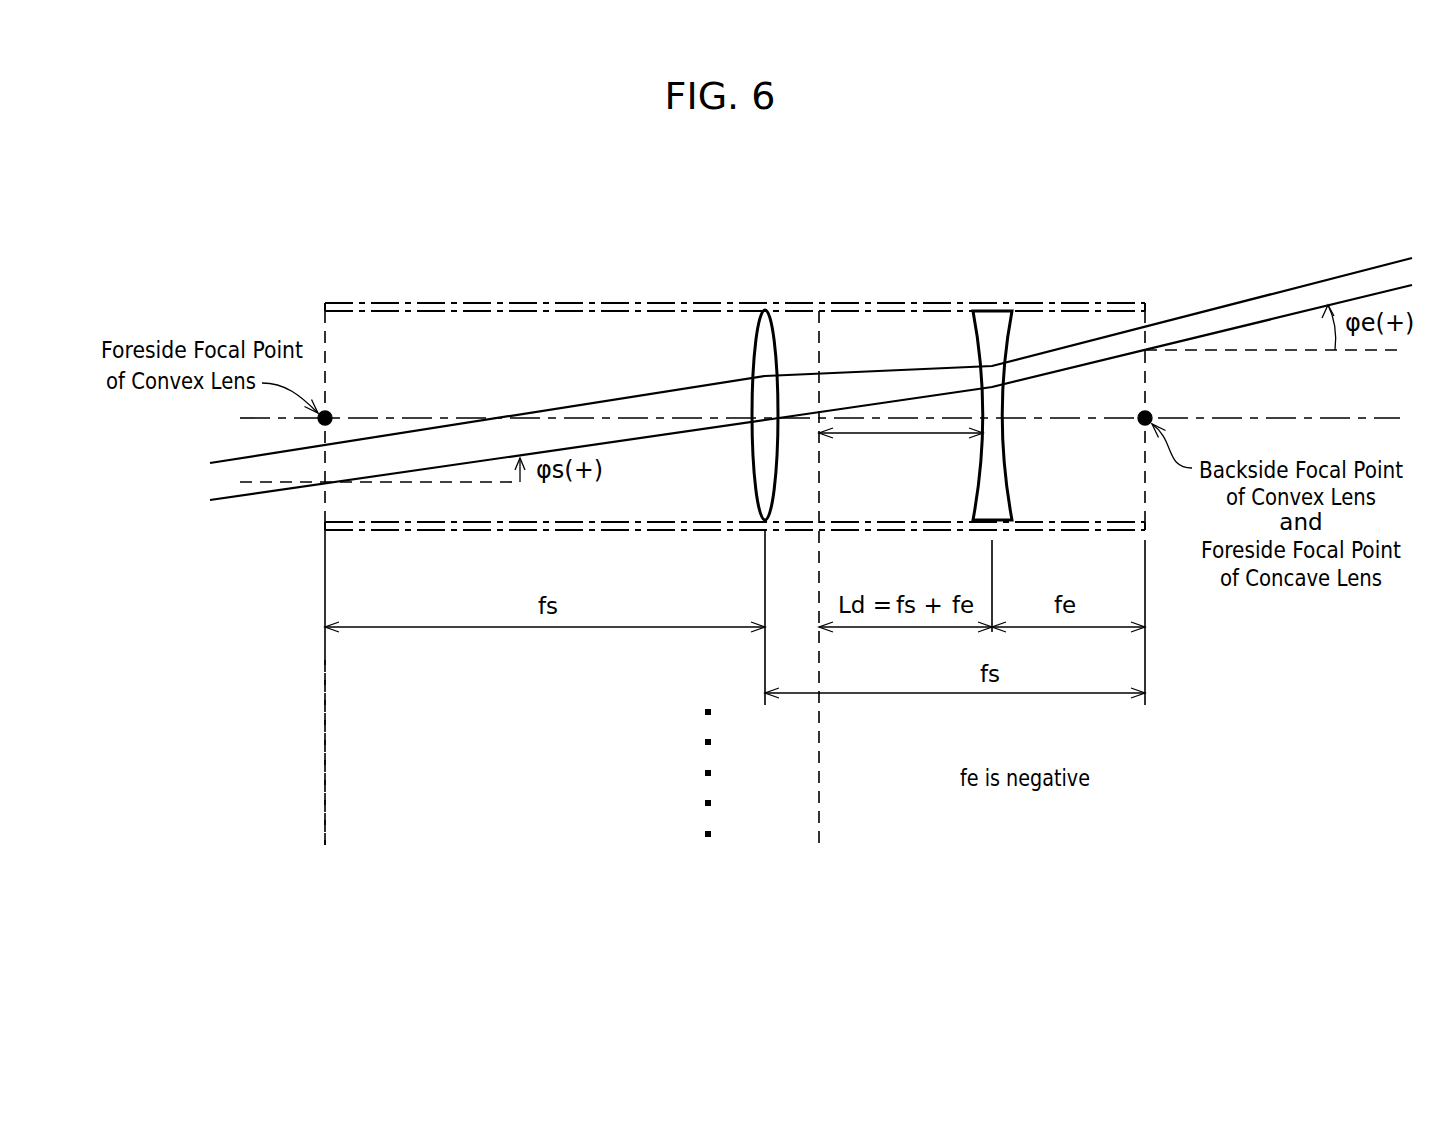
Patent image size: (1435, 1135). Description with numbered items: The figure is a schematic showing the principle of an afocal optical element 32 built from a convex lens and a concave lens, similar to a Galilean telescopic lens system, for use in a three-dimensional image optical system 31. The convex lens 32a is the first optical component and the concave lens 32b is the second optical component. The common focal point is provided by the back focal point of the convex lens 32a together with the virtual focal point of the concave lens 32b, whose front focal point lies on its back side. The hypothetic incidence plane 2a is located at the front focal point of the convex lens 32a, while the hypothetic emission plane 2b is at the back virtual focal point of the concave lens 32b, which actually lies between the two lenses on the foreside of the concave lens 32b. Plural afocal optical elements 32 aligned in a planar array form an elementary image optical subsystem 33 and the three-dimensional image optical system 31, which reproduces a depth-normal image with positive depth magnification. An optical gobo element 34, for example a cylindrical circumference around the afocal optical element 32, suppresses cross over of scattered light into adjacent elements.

The three-dimensional image optical system 31 is at (735, 321).
The afocal optical element 32 is at (892, 365).
The convex lens 32a is at (680, 374).
The concave lens 32b is at (1087, 376).
The elementary image optical subsystem 33 is at (275, 752).
The optical gobo element 34 is at (735, 417).
The hypothetic incidence plane 2a is at (330, 722).
The hypothetic emission plane 2b is at (830, 614).